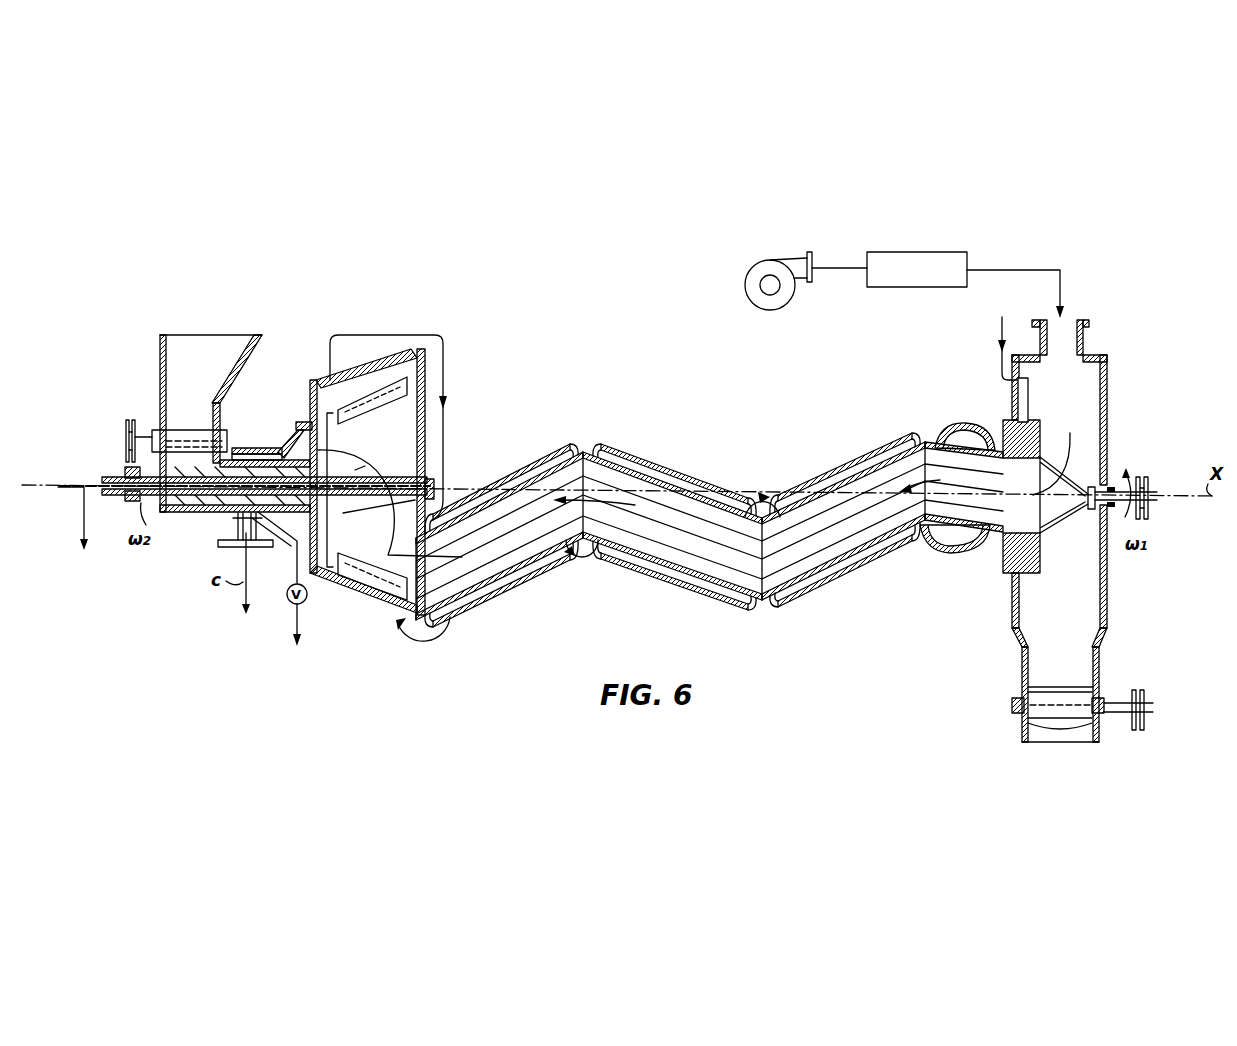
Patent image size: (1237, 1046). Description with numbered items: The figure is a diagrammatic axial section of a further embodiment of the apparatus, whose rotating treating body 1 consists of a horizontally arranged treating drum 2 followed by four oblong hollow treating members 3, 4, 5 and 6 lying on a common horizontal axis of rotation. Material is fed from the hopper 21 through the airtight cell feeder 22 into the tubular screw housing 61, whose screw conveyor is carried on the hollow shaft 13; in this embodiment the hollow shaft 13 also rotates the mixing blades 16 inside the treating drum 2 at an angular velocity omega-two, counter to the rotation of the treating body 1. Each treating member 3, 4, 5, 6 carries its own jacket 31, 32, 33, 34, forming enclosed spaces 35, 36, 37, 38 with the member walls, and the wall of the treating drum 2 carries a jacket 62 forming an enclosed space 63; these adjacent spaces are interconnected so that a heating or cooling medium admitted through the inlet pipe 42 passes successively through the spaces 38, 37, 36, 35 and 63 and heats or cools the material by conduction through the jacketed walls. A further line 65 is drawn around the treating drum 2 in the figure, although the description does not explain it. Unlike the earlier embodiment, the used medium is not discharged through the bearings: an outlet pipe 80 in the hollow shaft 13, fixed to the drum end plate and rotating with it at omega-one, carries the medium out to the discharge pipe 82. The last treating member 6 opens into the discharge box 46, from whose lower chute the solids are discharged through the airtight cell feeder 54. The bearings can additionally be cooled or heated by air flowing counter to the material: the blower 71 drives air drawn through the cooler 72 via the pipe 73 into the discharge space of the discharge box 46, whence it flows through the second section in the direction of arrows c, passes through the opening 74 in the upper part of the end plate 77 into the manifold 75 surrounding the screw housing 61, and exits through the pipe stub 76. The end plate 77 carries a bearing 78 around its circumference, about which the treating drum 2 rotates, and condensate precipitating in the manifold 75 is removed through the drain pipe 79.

The treating body 1 is at (709, 538).
The treating drum 2 is at (395, 481).
The treating member 3 is at (499, 526).
The treating member 4 is at (672, 535).
The treating member 5 is at (882, 508).
The treating member 6 is at (993, 548).
The hollow shaft 13 is at (180, 513).
The mixing blades 16 is at (373, 397).
The hopper 21 is at (160, 358).
The cell feeder 22 is at (190, 432).
The jacket 31 is at (490, 601).
The jacket 32 is at (660, 581).
The jacket 33 is at (827, 588).
The jacket 34 is at (960, 555).
The enclosed space 35 is at (530, 463).
The enclosed space 36 is at (660, 467).
The enclosed space 37 is at (843, 463).
The enclosed space 38 is at (953, 427).
The inlet pipe 42 is at (1001, 330).
The discharge box 46 is at (1114, 400).
The cell feeder 54 is at (1057, 710).
The tubular housing 61 is at (257, 452).
The jacket 62 is at (367, 615).
The enclosed space 63 is at (390, 347).
The heating medium line 65 is at (443, 335).
The blower 71 is at (777, 257).
The cooler 72 is at (933, 252).
The pipe 73 is at (1058, 270).
The opening 74 is at (298, 430).
The manifold 75 is at (287, 541).
The pipe stub 76 is at (236, 526).
The end plate 77 is at (308, 522).
The bearing 78 is at (305, 421).
The drain pipe 79 is at (301, 617).
The outlet pipe 80 is at (424, 492).
The discharge pipe 82 is at (60, 518).